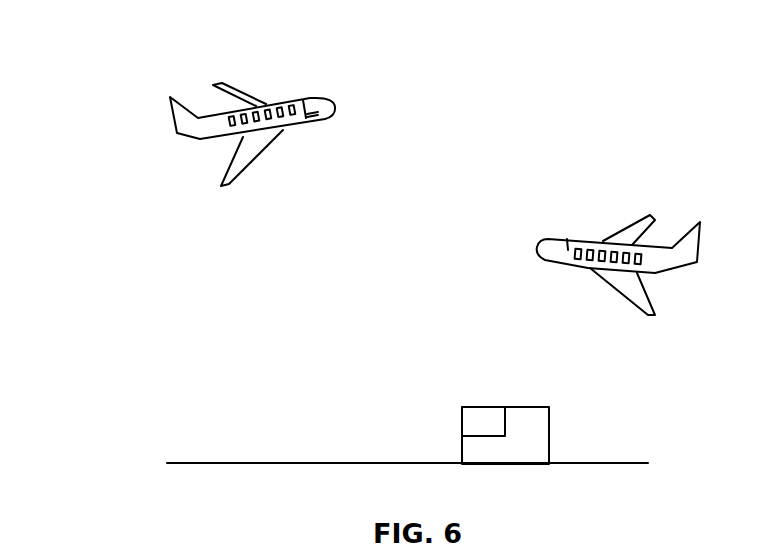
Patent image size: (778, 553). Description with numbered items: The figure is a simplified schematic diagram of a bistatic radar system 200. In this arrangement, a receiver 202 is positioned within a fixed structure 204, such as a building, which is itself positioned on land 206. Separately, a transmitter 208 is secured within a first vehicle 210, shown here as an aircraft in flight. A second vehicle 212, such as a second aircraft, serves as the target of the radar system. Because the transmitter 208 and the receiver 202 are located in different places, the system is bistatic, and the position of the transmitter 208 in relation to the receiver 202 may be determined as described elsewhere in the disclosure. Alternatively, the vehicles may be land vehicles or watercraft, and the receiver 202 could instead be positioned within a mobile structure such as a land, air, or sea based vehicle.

The bistatic radar system 200 is at (134, 36).
The receiver 202 is at (485, 418).
The fixed structure 204 is at (550, 436).
The land 206 is at (270, 462).
The transmitter 208 is at (317, 117).
The first vehicle 210 is at (210, 140).
The second vehicle 212 is at (578, 243).